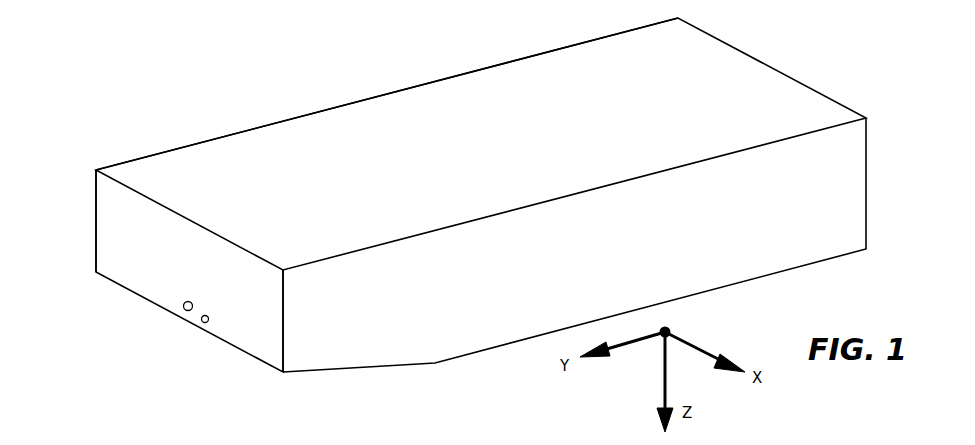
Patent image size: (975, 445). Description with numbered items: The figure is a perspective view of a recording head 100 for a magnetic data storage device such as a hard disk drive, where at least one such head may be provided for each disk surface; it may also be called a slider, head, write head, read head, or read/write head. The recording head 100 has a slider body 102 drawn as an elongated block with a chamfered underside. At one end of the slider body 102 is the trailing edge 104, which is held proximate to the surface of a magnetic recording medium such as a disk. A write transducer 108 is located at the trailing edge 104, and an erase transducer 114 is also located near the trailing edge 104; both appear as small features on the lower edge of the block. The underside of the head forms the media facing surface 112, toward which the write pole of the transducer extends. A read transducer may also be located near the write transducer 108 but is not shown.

The recording head 100 is at (815, 30).
The slider body 102 is at (423, 95).
The trailing edge 104 is at (96, 248).
The write transducer 108 is at (184, 311).
The media facing surface 112 is at (270, 372).
The erase transducer 114 is at (204, 324).